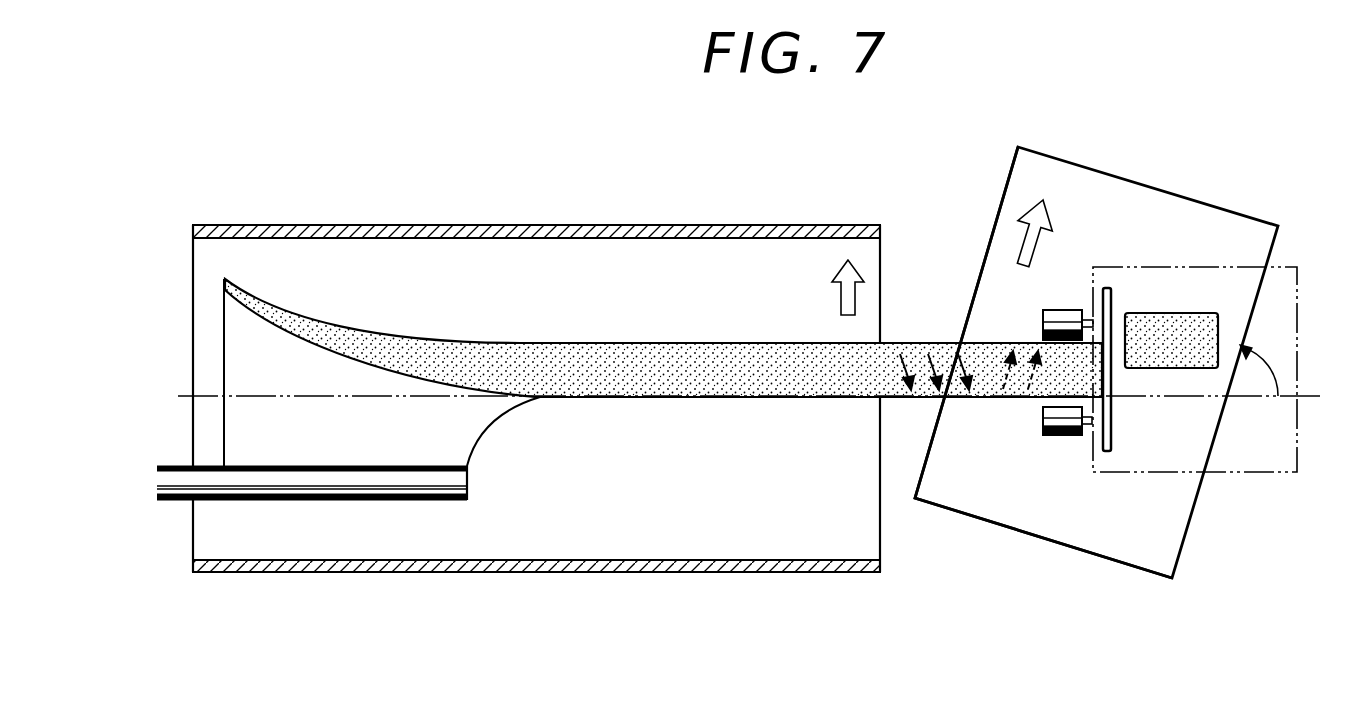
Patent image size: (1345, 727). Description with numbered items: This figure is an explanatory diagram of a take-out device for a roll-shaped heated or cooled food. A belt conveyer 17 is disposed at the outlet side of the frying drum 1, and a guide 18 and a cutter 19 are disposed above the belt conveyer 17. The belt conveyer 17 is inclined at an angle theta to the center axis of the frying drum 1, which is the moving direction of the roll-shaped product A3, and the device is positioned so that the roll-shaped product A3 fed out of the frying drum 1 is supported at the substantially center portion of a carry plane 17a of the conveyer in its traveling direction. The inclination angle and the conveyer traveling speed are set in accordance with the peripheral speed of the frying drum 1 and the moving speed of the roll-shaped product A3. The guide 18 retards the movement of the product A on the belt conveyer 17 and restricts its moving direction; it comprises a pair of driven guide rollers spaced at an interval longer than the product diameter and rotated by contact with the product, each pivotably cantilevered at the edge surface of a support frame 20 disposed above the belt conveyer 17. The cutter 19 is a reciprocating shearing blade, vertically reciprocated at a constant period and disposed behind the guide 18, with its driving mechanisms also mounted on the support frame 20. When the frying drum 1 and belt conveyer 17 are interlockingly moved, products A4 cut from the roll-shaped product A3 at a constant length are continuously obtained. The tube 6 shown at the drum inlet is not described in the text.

The frying drum 1 is at (430, 225).
The product A is at (260, 343).
The roll-shaped product A3 is at (703, 343).
The products A4 is at (1195, 313).
The optical fiber tube 6 is at (350, 482).
The belt conveyer 17 is at (1045, 543).
The carry plane 17a is at (960, 490).
The guide 18 is at (1055, 310).
The cutter 19 is at (1110, 437).
The support frame 20 is at (1297, 473).